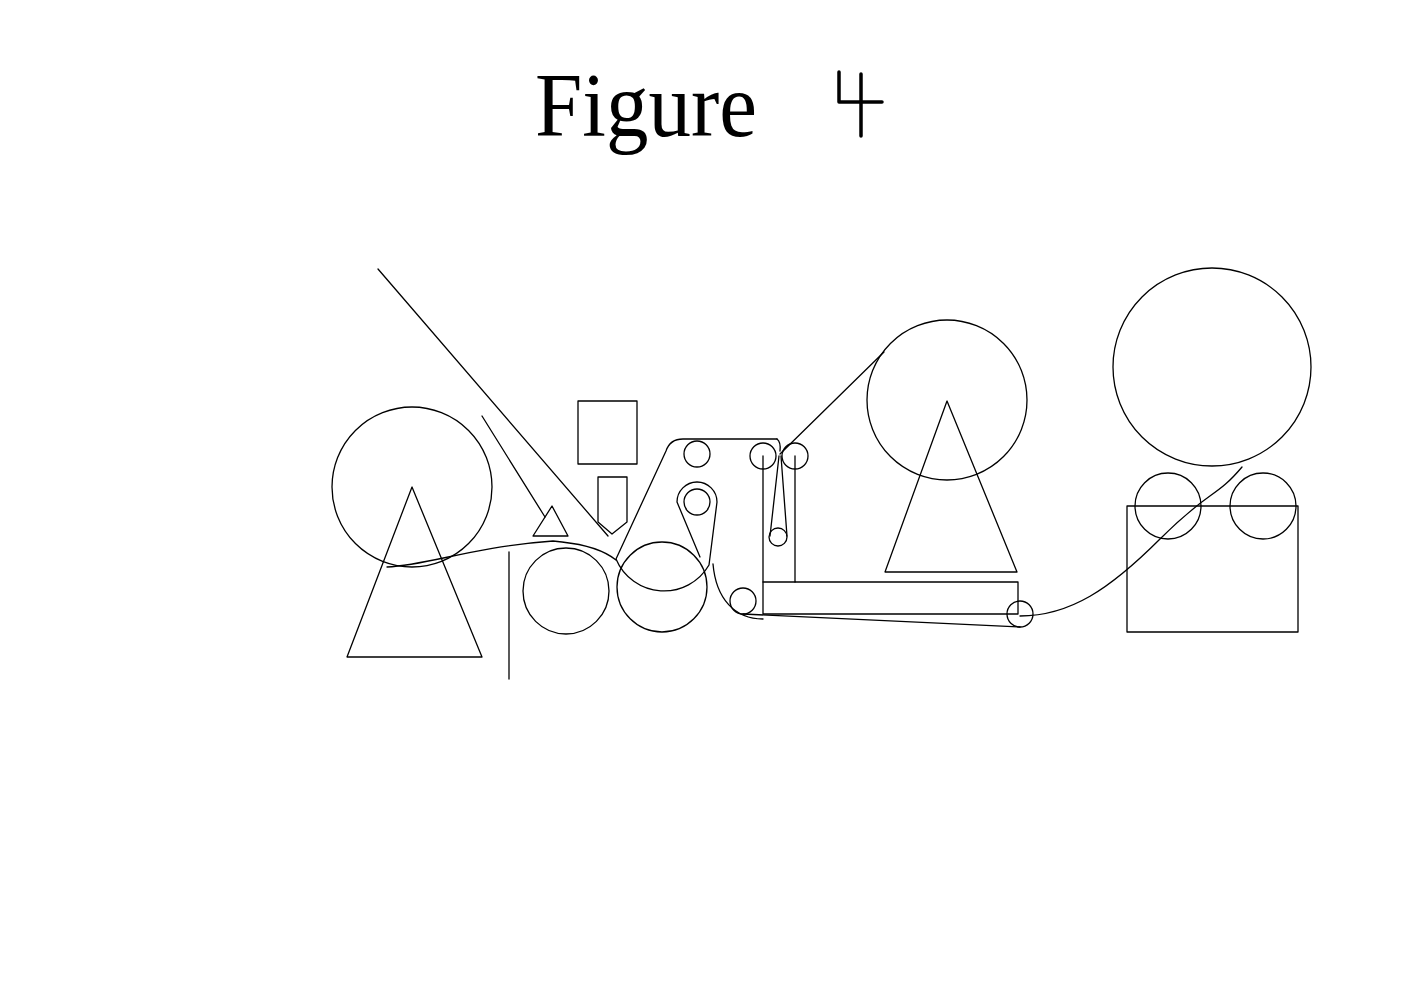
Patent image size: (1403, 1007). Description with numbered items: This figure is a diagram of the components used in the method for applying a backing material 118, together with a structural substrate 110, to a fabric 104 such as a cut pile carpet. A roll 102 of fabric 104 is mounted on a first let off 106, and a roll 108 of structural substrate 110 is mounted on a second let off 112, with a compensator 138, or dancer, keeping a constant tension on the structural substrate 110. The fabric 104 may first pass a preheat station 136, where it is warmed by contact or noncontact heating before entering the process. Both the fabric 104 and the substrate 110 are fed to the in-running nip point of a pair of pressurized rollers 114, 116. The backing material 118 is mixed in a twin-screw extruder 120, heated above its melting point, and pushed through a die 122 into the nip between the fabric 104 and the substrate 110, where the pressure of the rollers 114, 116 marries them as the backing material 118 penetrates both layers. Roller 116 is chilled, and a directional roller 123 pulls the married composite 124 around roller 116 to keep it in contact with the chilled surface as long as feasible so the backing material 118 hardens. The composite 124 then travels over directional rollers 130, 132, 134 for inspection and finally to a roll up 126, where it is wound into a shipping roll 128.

The roll 102 is at (333, 445).
The fabric 104 is at (509, 680).
The first let off 106 is at (393, 618).
The roll 108 is at (953, 318).
The structural substrate 110 is at (822, 398).
The second let off 112 is at (651, 490).
The roller 114 is at (582, 617).
The roller 116 is at (685, 607).
The backing material 118 is at (474, 376).
The twin-screw extruder 120 is at (614, 425).
The die 122 is at (608, 508).
The directional roller 123 is at (702, 505).
The composite 124 is at (740, 510).
The roll up 126 is at (1255, 580).
The shipping roll 128 is at (1268, 287).
The directional roller 130 is at (1018, 618).
The directional roller 132 is at (1153, 487).
The directional roller 134 is at (1280, 492).
The preheat station 136 is at (482, 417).
The compensator 138 is at (778, 547).